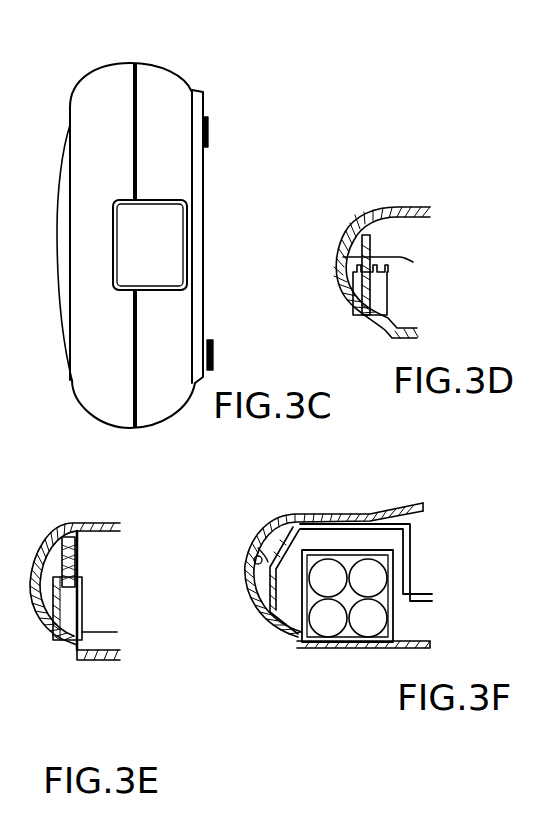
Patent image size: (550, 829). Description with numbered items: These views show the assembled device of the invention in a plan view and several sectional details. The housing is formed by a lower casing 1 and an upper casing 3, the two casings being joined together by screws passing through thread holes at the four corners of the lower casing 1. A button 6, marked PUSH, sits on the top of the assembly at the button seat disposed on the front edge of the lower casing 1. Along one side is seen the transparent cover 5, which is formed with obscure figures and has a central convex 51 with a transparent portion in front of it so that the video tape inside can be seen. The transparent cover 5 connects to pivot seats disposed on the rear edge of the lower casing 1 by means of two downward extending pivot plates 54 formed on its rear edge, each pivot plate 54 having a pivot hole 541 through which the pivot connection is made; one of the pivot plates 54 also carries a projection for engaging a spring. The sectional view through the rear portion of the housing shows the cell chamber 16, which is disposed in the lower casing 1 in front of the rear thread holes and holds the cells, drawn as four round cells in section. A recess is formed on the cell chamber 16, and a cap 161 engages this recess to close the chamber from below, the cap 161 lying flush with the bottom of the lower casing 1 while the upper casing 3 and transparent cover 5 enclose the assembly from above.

In FIG. 3C, the lower casing 1 is at (182, 172).
In FIG. 3D, the lower casing 1 is at (373, 243).
In FIG. 3E, the lower casing 1 is at (103, 660).
In FIG. 3F, the lower casing 1 is at (270, 617).
In FIG. 3C, the upper casing 3 is at (92, 113).
In FIG. 3D, the upper casing 3 is at (437, 218).
In FIG. 3E, the upper casing 3 is at (113, 527).
In FIG. 3F, the upper casing 3 is at (408, 555).
In FIG. 3D, the transparent cover 5 is at (400, 207).
In FIG. 3F, the transparent cover 5 is at (398, 507).
In FIG. 3C, the button 6 is at (150, 260).
In FIG. 3F, the cell chamber 16 is at (343, 550).
In FIG. 3C, the central convex 51 is at (63, 213).
In FIG. 3F, the pivot plate 54 is at (263, 542).
In FIG. 3F, the cap 161 is at (342, 648).
In FIG. 3F, the pivot hole 541 is at (248, 568).